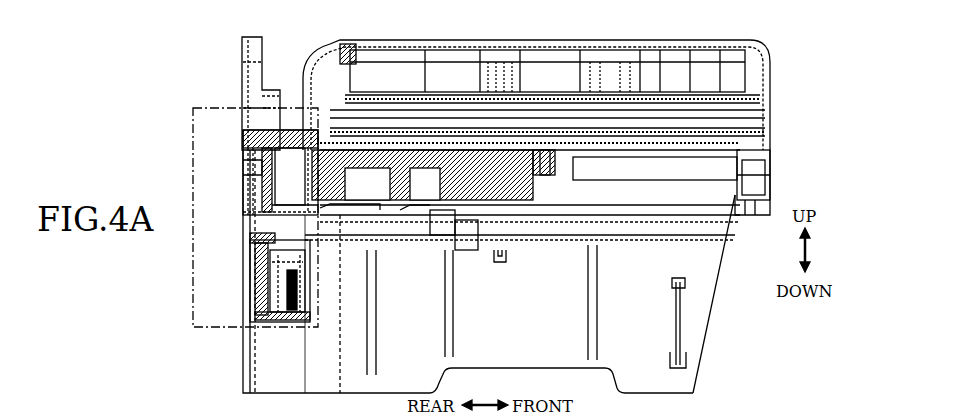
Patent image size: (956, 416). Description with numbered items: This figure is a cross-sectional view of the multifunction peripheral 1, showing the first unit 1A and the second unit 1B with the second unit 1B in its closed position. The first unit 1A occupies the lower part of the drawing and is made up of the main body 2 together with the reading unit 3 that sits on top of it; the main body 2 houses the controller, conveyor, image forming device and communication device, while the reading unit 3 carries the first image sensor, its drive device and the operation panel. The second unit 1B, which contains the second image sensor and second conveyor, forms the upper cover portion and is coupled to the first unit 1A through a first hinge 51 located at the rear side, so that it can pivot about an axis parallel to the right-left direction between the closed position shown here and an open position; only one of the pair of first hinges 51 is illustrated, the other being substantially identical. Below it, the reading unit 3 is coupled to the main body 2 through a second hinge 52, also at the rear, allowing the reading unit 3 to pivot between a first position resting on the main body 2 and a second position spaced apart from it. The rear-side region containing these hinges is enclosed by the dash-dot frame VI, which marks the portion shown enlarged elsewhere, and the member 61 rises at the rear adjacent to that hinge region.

The multifunction peripheral 1 is at (760, 308).
The first unit 1A is at (700, 330).
The second unit 1B is at (683, 40).
The main body 2 is at (718, 250).
The reading unit 3 is at (720, 170).
The first hinge 51 is at (249, 150).
The second hinge 52 is at (249, 245).
The side wall member 61 is at (247, 50).
The section VI view indicator VI is at (194, 124).